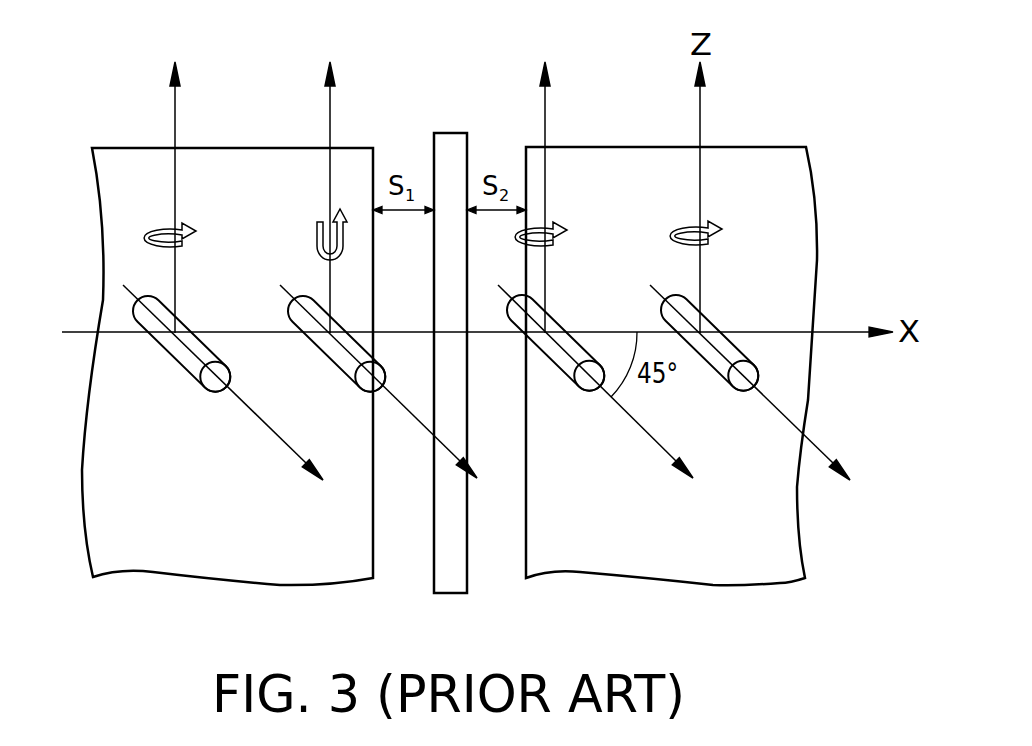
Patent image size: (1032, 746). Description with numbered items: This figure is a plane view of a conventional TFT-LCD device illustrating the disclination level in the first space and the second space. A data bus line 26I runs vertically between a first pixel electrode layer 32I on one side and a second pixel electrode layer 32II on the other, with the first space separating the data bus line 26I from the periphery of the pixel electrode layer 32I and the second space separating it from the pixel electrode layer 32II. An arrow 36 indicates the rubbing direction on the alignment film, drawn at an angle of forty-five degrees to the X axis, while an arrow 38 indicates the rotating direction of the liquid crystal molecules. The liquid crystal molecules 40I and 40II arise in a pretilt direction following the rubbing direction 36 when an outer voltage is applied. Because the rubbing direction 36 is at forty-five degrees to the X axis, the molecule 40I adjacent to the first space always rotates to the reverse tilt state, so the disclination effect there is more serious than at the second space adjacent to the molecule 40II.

The data bus line 26I is at (448, 143).
The pixel electrode layer 32I is at (255, 549).
The pixel electrode layer 32II is at (692, 549).
The arrow indicating rubbing direction 36 is at (817, 442).
The arrow indicating LC rotating direction 38 is at (316, 232).
The LC molecule 40I is at (343, 358).
The LC molecule 40II is at (560, 358).